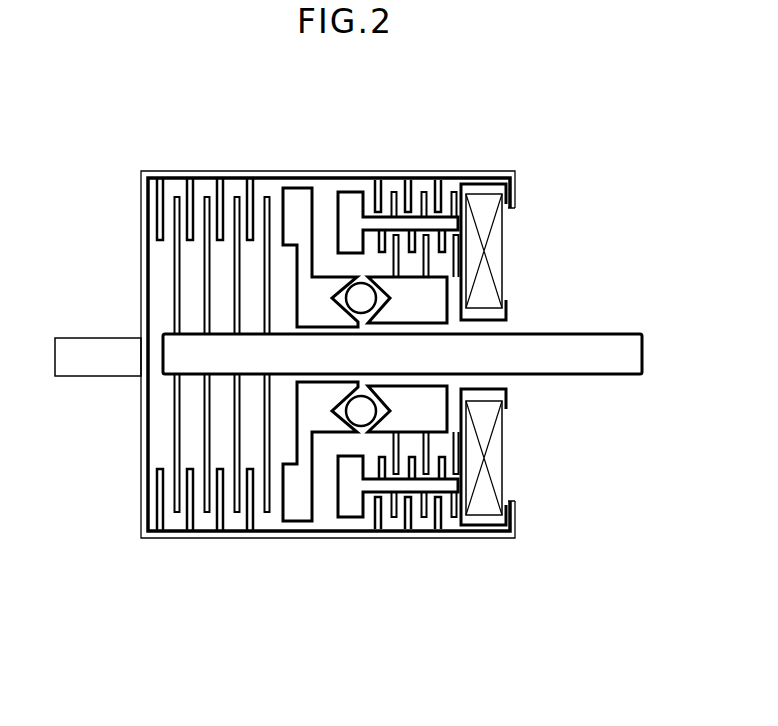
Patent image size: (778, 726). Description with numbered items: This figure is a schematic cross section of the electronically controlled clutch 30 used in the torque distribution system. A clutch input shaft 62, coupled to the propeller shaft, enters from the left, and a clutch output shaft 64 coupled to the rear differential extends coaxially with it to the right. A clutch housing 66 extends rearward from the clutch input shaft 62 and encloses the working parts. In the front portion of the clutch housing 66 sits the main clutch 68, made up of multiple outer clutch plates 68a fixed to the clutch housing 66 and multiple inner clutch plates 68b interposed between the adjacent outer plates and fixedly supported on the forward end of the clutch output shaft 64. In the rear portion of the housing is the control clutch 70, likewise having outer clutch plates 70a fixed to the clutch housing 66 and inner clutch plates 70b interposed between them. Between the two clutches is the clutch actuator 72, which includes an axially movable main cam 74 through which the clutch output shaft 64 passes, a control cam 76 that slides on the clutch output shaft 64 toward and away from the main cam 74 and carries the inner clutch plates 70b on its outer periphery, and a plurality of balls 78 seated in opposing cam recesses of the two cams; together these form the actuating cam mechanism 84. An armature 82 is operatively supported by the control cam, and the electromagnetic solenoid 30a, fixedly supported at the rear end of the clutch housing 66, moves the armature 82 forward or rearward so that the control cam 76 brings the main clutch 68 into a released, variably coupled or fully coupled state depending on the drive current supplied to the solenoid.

The electronically controlled clutch 30 is at (288, 138).
The electromagnetic solenoid 30a is at (503, 272).
The clutch input shaft 62 is at (80, 338).
The clutch output shaft 64 is at (622, 334).
The clutch housing 66 is at (226, 171).
The main clutch 68 is at (205, 505).
The outer clutch plates 68a is at (192, 497).
The inner clutch plates 68b is at (240, 435).
The control clutch 70 is at (425, 180).
The outer clutch plates 70a is at (386, 512).
The inner clutch plates 70b is at (392, 253).
The clutch actuator 72 is at (318, 190).
The main cam 74 is at (316, 505).
The control cam 76 is at (428, 490).
The balls 78 is at (361, 427).
The armature 82 is at (353, 190).
The actuating cam mechanism 84 is at (377, 267).